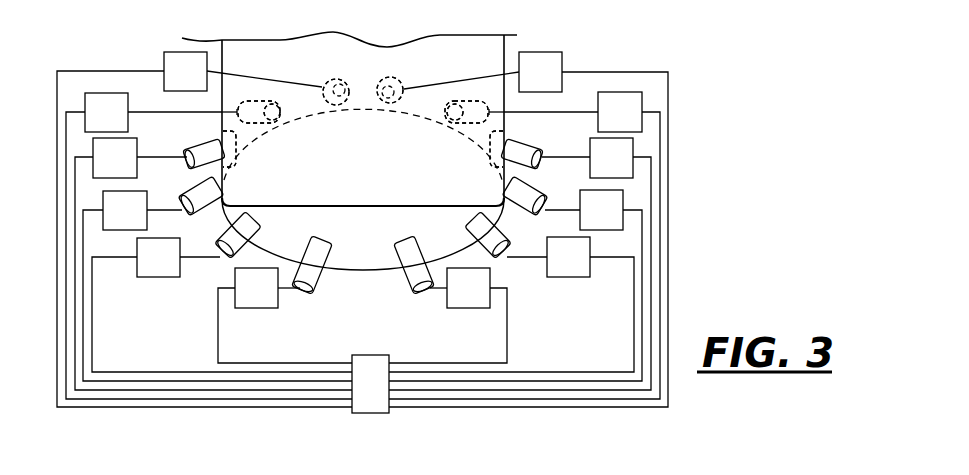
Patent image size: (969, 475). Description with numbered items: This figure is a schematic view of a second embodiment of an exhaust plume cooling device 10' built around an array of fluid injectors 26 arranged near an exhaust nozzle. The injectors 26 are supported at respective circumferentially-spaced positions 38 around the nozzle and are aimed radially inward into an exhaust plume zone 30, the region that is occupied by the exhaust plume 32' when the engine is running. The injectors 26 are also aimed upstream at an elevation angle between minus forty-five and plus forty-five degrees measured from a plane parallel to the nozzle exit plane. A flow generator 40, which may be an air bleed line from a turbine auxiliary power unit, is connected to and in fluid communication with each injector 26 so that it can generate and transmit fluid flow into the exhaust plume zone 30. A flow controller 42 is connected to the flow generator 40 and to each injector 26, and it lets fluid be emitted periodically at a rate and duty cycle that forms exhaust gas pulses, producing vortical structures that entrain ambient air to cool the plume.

The monitoring system 10' is at (747, 114).
The injector 26 is at (338, 79).
The circumferentially-spaced positions 38 is at (228, 138).
The exhaust plume zone 30 is at (372, 206).
The exhaust plume 32' is at (333, 37).
The flow generator 40 is at (385, 394).
The flow controller 42 is at (200, 82).